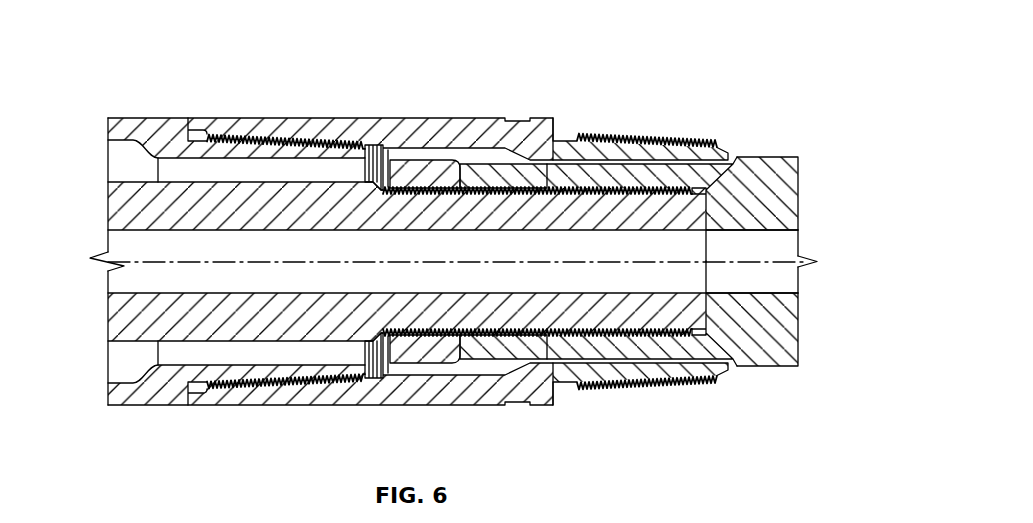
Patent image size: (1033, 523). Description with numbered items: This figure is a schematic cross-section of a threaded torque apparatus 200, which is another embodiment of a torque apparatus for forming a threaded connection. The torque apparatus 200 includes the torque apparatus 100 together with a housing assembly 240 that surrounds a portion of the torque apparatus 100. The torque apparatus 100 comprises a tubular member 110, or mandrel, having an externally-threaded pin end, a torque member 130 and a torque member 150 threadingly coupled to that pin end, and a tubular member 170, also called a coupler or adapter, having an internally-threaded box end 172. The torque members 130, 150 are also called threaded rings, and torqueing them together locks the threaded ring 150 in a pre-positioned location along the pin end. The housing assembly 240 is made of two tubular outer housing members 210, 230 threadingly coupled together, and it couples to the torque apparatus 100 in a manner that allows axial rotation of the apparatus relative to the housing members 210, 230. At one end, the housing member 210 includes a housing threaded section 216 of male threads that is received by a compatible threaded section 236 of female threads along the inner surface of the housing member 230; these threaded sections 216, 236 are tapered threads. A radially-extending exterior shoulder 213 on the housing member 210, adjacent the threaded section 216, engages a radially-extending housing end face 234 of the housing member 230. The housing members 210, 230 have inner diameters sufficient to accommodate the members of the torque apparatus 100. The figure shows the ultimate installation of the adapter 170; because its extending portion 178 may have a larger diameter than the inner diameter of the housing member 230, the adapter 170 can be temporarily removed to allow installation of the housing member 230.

The torque apparatus 200 is at (163, 30).
The housing assembly 240 is at (104, 128).
The torque apparatus 100 is at (92, 204).
The tubular member 110 is at (120, 283).
The outer housing member 210 is at (125, 124).
The exterior shoulder 213 is at (189, 121).
The housing end face 234 is at (207, 132).
The threaded section 236 is at (270, 134).
The housing threaded section 216 is at (223, 136).
The outer housing member 230 is at (533, 132).
The box end 172 is at (692, 172).
The tubular member 170 is at (765, 162).
The extending portion 178 is at (758, 367).
The torque member 130 is at (398, 355).
The torque member 150 is at (488, 350).